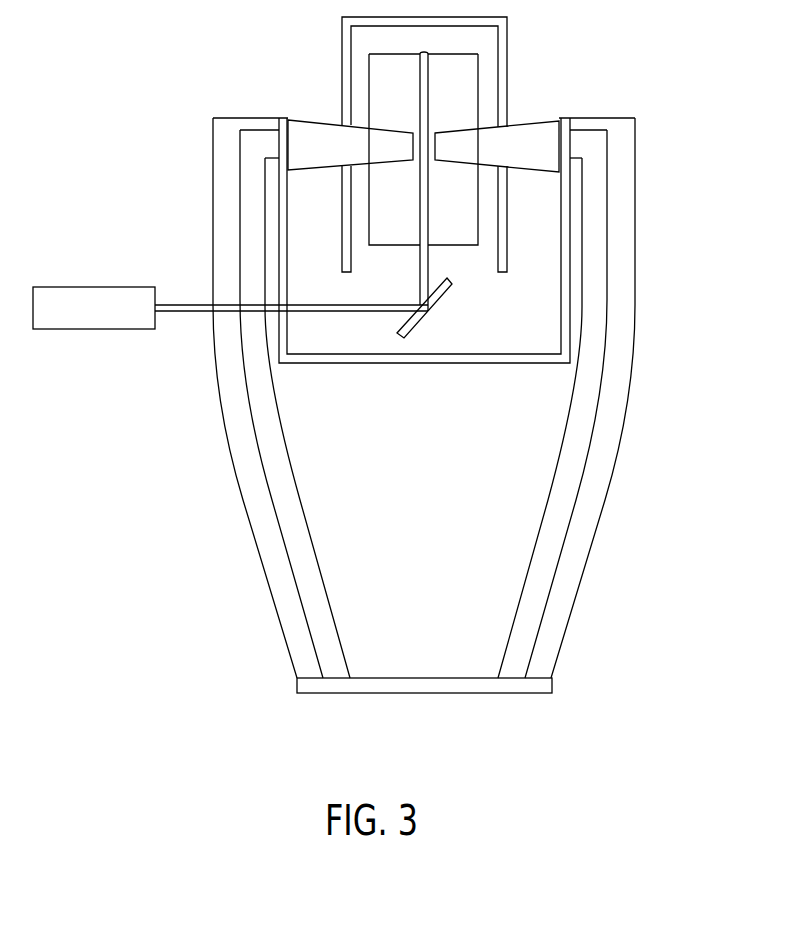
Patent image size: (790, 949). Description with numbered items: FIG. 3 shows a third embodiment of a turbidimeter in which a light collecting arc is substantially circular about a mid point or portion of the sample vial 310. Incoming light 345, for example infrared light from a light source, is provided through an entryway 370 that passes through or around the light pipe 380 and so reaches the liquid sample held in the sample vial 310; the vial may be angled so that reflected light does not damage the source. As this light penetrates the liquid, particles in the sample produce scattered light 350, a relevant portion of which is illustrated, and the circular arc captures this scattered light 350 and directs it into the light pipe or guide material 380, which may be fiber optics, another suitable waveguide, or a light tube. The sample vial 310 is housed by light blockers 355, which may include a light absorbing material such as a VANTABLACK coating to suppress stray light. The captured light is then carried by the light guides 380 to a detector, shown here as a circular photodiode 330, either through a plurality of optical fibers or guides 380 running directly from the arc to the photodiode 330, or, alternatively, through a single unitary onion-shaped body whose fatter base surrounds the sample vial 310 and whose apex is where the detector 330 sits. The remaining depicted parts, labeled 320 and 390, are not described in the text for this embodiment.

The sample vial 310 is at (385, 100).
The motor 320 is at (90, 287).
The circular photodiode 330 is at (478, 685).
The incoming light 345 is at (430, 260).
The scattered light 350 is at (542, 132).
The light blockers 355 is at (508, 48).
The entryway 370 is at (248, 312).
The light pipe or guide material 380 is at (563, 483).
The vertical shaft 390 is at (445, 318).